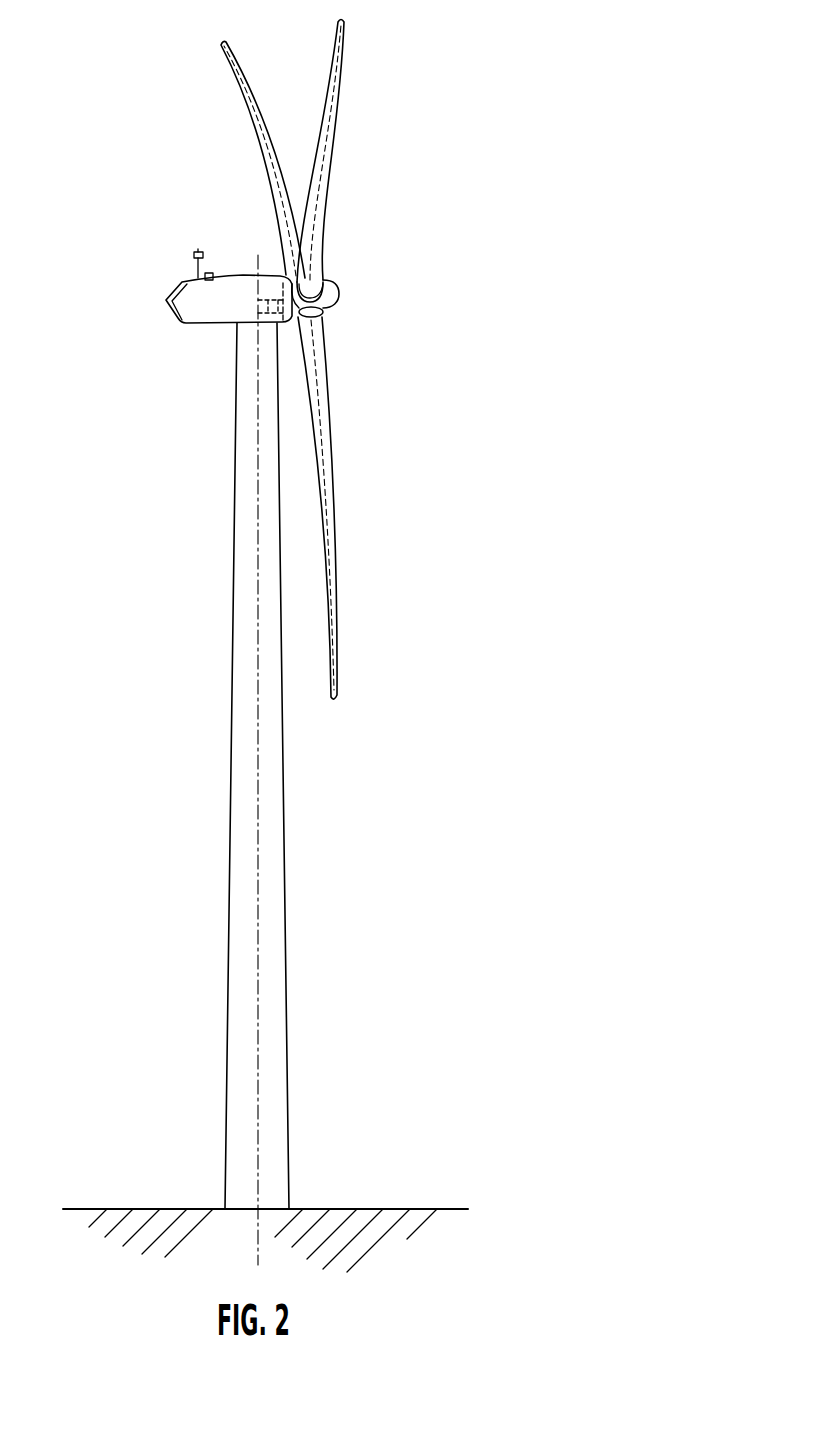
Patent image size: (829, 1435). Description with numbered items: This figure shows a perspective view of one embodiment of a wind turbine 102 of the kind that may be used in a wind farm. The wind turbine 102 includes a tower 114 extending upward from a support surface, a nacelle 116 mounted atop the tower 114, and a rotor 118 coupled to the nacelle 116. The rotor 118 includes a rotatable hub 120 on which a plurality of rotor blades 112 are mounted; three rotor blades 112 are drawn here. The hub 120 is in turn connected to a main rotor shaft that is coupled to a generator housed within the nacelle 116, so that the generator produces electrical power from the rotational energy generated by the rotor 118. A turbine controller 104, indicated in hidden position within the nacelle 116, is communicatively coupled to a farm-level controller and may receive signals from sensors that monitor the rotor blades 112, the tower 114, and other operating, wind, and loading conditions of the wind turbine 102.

The wind turbine 102 is at (455, 75).
The turbine controller 104 is at (283, 275).
The rotor blades 112 is at (262, 140).
The tower 114 is at (230, 888).
The nacelle 116 is at (210, 325).
The rotor 118 is at (363, 282).
The rotatable hub 120 is at (336, 297).